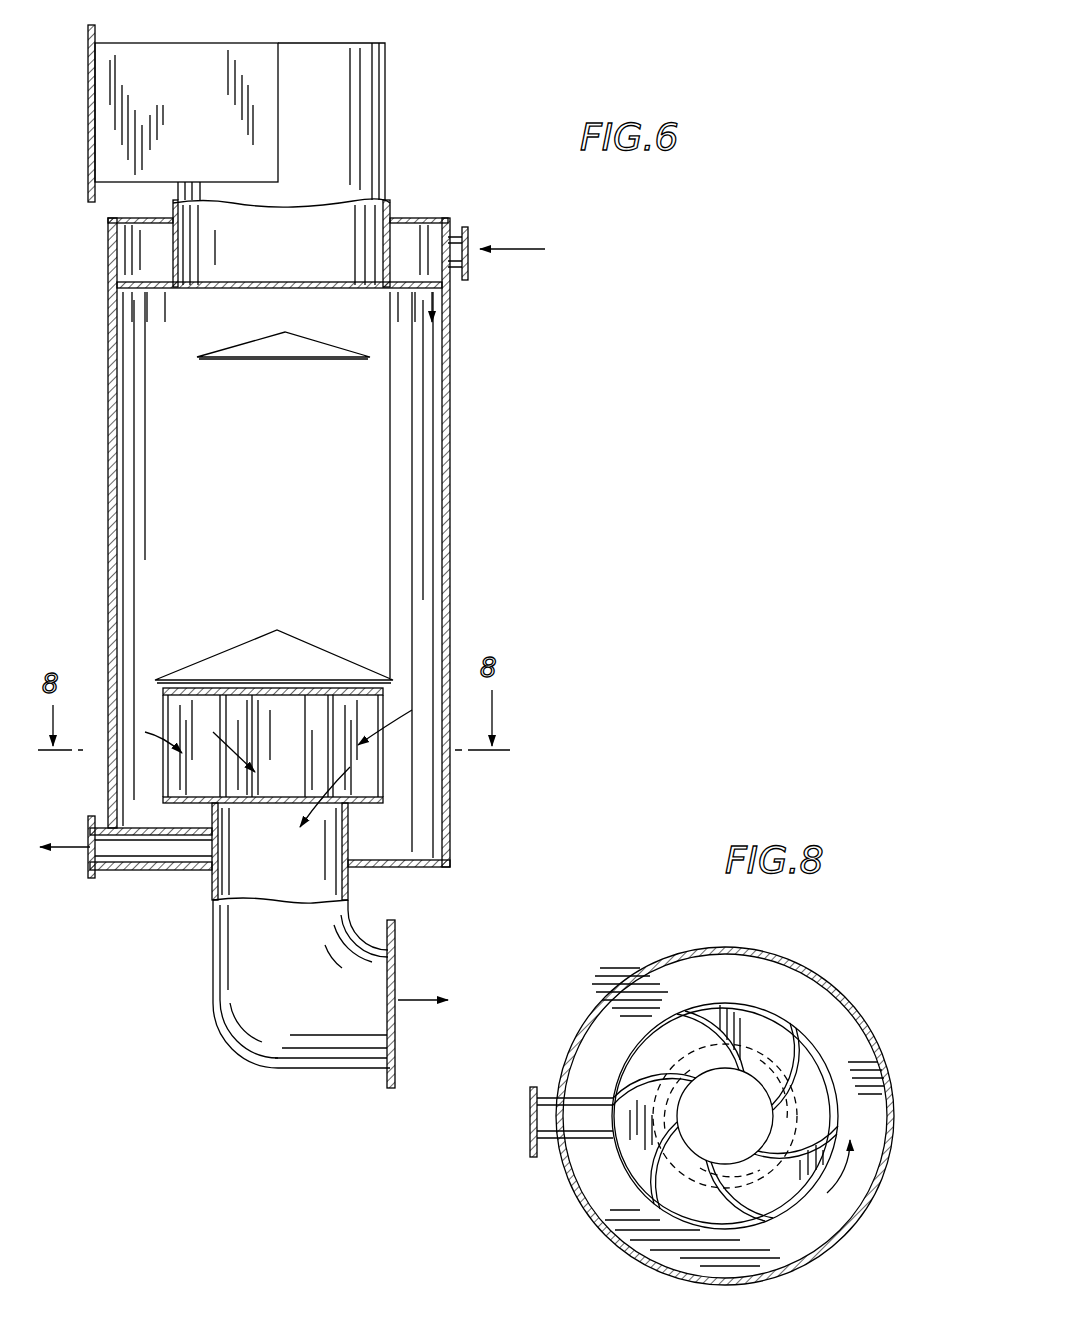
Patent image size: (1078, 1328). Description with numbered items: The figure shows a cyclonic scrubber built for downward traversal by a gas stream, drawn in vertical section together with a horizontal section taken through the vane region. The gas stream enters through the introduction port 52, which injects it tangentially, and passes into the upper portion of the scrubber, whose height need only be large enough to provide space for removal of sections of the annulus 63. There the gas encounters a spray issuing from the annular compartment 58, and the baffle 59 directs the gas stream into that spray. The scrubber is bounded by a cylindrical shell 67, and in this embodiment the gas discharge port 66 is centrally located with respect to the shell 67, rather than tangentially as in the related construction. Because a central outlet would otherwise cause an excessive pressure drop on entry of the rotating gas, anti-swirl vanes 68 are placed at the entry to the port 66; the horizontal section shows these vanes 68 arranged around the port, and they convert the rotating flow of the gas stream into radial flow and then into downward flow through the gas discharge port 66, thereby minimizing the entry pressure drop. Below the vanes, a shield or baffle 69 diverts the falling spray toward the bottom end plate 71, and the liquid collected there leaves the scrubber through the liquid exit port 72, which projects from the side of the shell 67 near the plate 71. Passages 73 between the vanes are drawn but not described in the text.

In FIG. 6, the introduction port 52 is at (200, 47).
In FIG. 6, the annulus 63 is at (415, 218).
In FIG. 6, the annular compartment 58 is at (445, 217).
In FIG. 6, the baffle 59 is at (334, 345).
In FIG. 6, the cylindrical shell 67 is at (450, 562).
In FIG. 8, the cylindrical shell 67 is at (893, 1111).
In FIG. 6, the shield or baffle 69 is at (339, 656).
In FIG. 6, the anti-swirl vanes 68 is at (383, 780).
In FIG. 8, the anti-swirl vanes 68 is at (749, 1213).
In FIG. 6, the impeller vanes 73 is at (180, 799).
In FIG. 8, the impeller vanes 73 is at (714, 1224).
In FIG. 6, the bottom end plate 71 is at (425, 863).
In FIG. 6, the liquid exit port 72 is at (89, 857).
In FIG. 8, the liquid exit port 72 is at (533, 1128).
In FIG. 6, the gas discharge port 66 is at (350, 913).
In FIG. 8, the gas discharge port 66 is at (733, 1000).